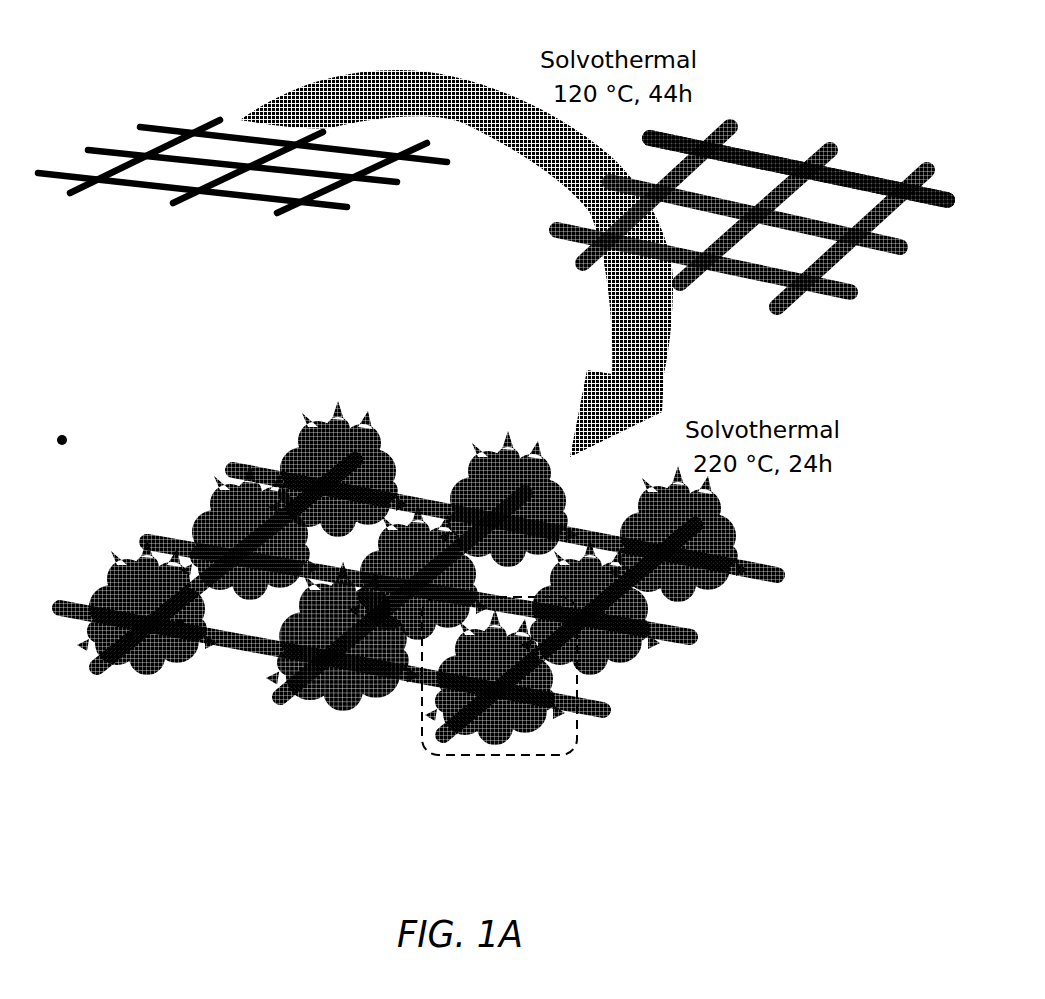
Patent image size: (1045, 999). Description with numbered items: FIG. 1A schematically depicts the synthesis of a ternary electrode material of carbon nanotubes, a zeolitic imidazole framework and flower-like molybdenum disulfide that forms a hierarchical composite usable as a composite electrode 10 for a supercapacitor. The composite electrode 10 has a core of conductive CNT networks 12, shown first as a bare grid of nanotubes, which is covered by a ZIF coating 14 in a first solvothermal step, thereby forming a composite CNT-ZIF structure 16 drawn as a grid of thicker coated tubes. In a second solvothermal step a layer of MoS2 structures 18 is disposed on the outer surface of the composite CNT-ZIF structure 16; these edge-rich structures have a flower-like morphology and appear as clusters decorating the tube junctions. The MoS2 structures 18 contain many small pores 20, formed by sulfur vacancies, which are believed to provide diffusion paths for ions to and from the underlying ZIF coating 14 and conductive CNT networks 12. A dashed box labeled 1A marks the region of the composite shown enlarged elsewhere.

The composite electrode 10 is at (402, 649).
The conductive CNT network 12 is at (167, 127).
The ZIF coating 14 is at (847, 170).
The composite CNT-ZIF structure 16 is at (770, 153).
The MoS2 structure 18 is at (113, 577).
The pore 20 is at (180, 623).
The detail region 1A is at (460, 755).